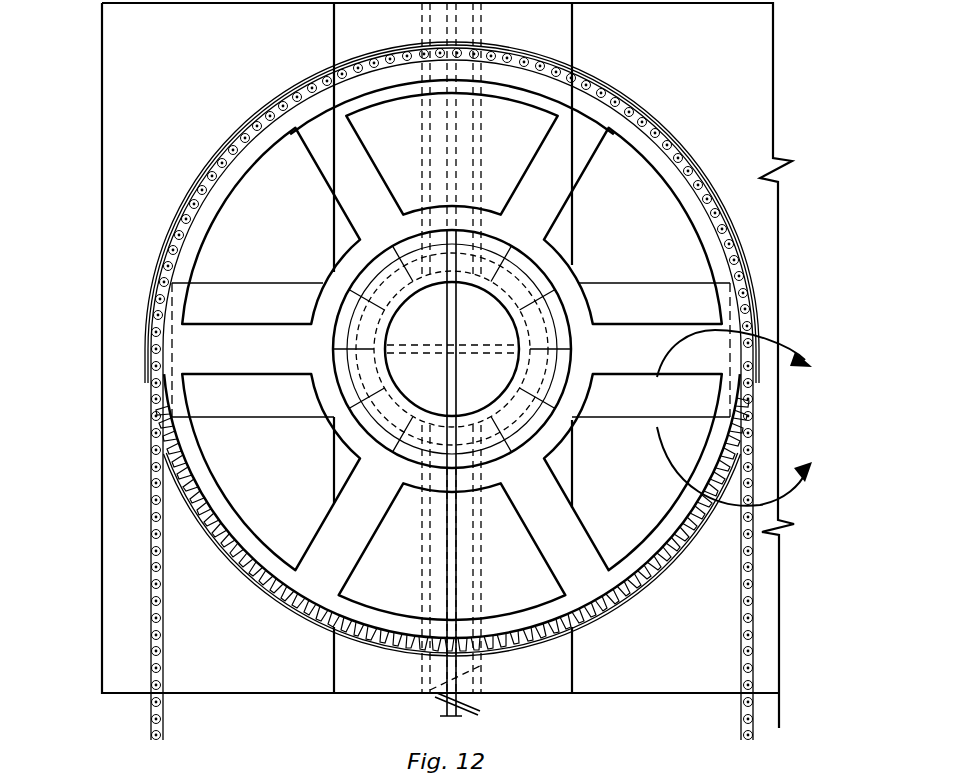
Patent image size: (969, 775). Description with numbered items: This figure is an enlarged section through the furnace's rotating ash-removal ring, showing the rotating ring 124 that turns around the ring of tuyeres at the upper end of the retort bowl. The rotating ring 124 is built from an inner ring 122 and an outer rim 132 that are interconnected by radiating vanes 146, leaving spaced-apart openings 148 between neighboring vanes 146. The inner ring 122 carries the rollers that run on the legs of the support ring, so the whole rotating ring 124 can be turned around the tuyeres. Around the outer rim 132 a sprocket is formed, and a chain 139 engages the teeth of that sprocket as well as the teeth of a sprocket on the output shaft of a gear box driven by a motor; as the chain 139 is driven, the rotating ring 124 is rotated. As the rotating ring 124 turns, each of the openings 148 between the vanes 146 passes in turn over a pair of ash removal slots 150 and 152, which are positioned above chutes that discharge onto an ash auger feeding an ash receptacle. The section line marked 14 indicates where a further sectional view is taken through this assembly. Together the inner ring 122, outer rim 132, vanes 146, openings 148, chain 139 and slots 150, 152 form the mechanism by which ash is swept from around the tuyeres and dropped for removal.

The section line 14- 14 is at (749, 418).
The inner ring 122 is at (338, 417).
The rotating ring 124 is at (452, 380).
The outer rim 132 is at (250, 548).
The chain 139 is at (757, 590).
The radiating vanes 146 is at (335, 170).
The openings 148 is at (451, 329).
The ash removal slot 150 is at (240, 412).
The ash removal slot 152 is at (643, 283).